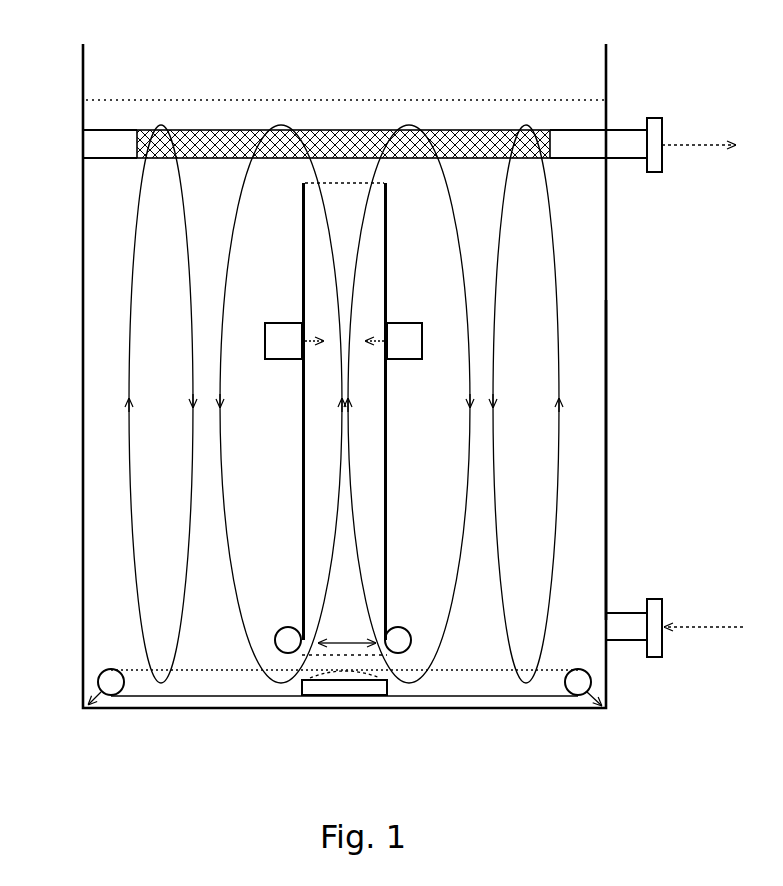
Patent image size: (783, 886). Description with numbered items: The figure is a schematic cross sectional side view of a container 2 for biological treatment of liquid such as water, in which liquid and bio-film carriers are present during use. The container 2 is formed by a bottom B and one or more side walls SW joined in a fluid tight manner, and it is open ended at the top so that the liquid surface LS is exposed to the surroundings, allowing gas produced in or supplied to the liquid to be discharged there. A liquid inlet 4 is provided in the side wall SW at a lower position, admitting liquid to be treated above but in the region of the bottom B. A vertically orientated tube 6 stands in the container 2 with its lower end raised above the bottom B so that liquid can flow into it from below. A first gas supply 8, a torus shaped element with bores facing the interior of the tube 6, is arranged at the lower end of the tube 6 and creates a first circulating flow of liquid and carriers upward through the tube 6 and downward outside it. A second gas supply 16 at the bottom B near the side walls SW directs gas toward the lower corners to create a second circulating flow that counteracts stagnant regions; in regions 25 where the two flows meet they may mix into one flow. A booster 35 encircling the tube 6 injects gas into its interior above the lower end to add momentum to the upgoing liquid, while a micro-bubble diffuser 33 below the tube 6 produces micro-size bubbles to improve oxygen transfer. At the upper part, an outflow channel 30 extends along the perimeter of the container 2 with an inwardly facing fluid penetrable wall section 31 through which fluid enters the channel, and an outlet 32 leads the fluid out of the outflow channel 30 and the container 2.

The container 2 is at (622, 336).
The side wall SW is at (609, 497).
The liquid surface LS is at (356, 99).
The fluid penetrable wall section 31 is at (148, 138).
The outflow channel 30 is at (584, 146).
The outlet 32 is at (679, 124).
The liquid inlet 4 is at (678, 609).
The regions where the two flows flow together 25 is at (490, 360).
The vertically orientated tube 6 is at (389, 478).
The booster 35 is at (403, 308).
The first gas supply 8 is at (277, 664).
The second gas supply 16 is at (122, 693).
The bottom B is at (459, 711).
The micro-bubble diffuser 33 is at (349, 689).